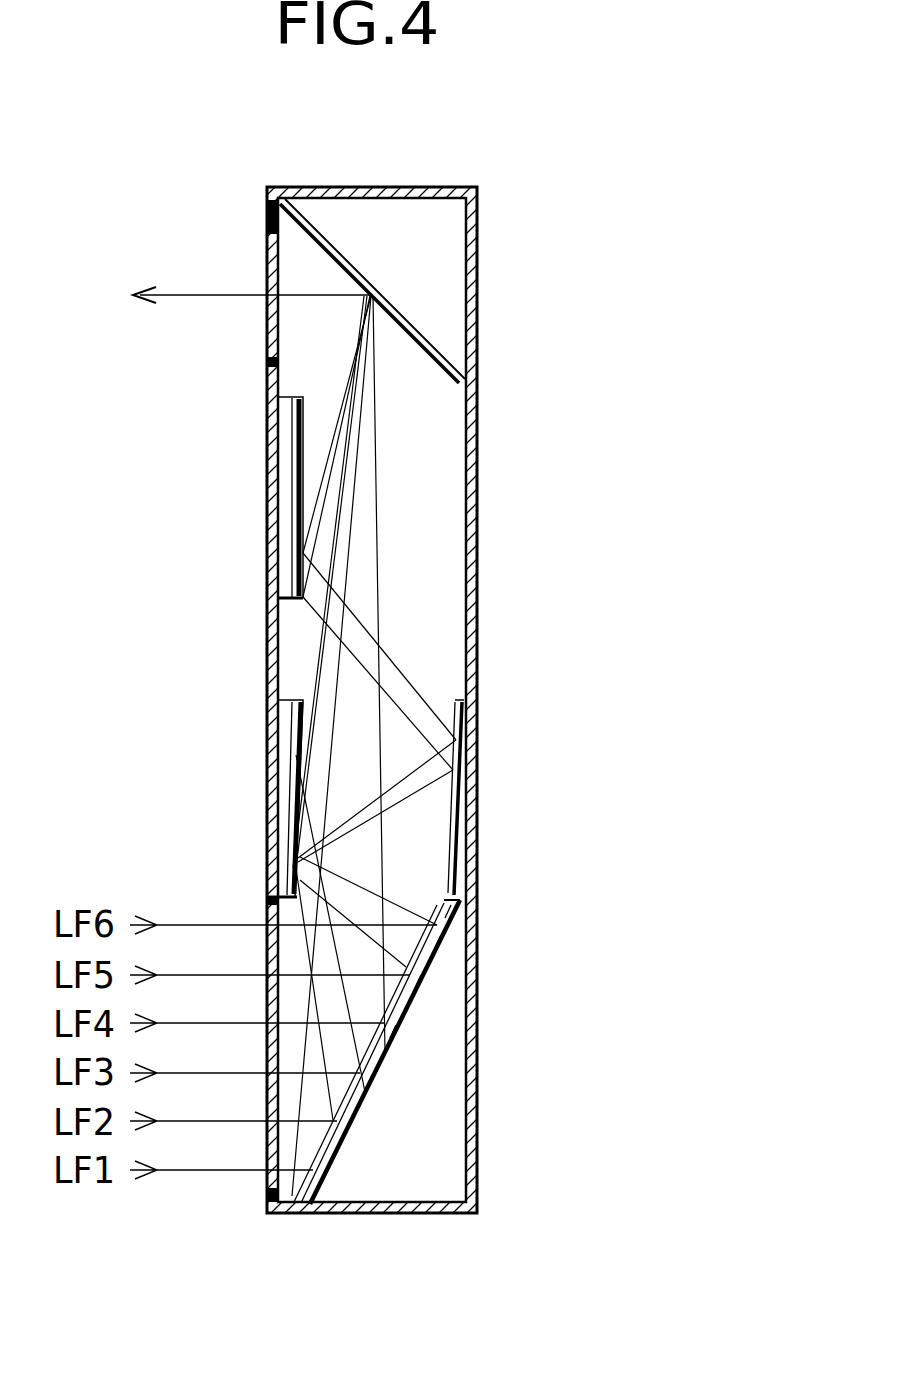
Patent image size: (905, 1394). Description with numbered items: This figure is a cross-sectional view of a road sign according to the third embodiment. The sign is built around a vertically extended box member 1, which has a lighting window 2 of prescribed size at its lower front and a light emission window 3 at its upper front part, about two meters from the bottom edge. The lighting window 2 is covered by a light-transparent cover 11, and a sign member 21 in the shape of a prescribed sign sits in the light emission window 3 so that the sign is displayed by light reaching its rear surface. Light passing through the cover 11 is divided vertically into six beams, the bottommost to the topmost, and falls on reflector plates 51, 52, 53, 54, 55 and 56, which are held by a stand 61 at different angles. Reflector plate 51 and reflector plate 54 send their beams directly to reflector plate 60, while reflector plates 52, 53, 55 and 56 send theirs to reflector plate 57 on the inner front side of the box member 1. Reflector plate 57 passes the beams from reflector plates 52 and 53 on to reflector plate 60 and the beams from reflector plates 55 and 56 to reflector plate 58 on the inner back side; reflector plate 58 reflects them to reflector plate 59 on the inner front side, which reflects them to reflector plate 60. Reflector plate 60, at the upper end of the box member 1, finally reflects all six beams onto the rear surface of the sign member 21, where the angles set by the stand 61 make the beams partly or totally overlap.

The box member 1 is at (434, 187).
The lighting window 2 is at (265, 1178).
The light emission window 3 is at (267, 345).
The cover 11 is at (266, 908).
The sign member 21 is at (267, 233).
The reflector plate 51 is at (296, 1172).
The reflector plate 52 is at (375, 1122).
The reflector plate 53 is at (385, 1073).
The reflector plate 54 is at (410, 1020).
The reflector plate 55 is at (430, 975).
The reflector plate 56 is at (455, 938).
The reflector plate 57 is at (300, 721).
The reflector plate 58 is at (456, 696).
The reflector plate 59 is at (290, 447).
The reflector plate 60 is at (405, 313).
The stand 61 is at (332, 1153).